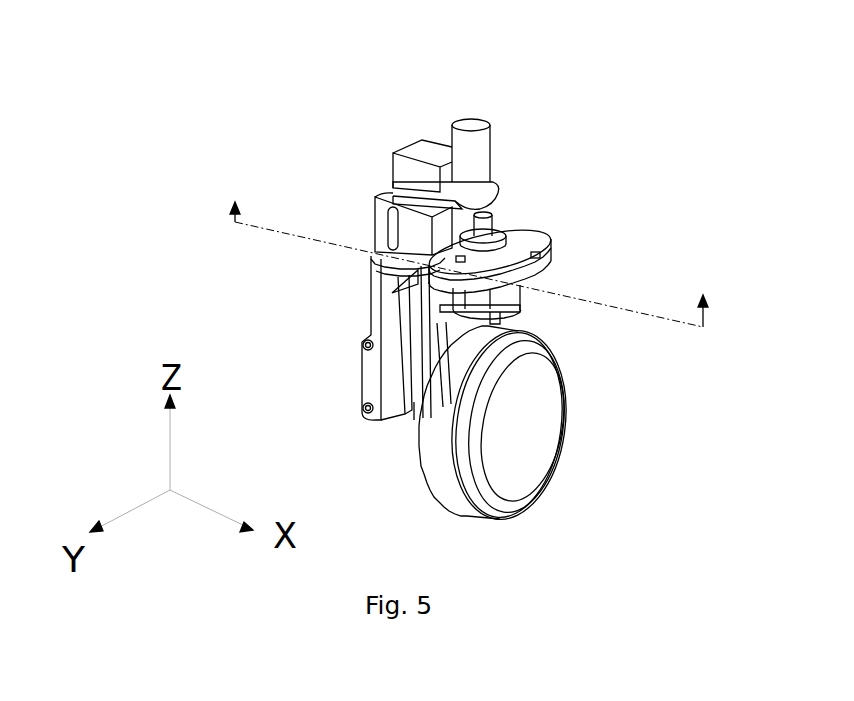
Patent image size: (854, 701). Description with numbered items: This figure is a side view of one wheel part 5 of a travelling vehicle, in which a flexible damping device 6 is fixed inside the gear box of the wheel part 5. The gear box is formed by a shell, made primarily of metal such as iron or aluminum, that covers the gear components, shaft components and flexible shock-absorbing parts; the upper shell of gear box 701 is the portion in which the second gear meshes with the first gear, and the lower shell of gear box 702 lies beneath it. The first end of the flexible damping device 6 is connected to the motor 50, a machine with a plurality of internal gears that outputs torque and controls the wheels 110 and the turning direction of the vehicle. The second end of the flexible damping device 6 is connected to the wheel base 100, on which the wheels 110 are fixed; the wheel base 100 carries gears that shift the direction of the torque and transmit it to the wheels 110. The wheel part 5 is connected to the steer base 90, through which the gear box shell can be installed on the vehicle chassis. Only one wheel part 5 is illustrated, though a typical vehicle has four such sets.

The wheel part 5 is at (537, 160).
The motor 50 is at (422, 170).
The upper shell of gear box 701 is at (422, 237).
The steer base 90 is at (387, 337).
The flexible damping device 6 is at (523, 275).
The lower hub 702 is at (520, 300).
The wheel base 100 is at (510, 328).
The wheels 110 is at (510, 427).